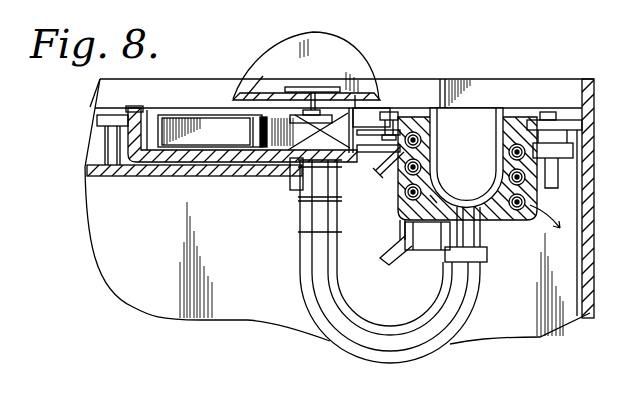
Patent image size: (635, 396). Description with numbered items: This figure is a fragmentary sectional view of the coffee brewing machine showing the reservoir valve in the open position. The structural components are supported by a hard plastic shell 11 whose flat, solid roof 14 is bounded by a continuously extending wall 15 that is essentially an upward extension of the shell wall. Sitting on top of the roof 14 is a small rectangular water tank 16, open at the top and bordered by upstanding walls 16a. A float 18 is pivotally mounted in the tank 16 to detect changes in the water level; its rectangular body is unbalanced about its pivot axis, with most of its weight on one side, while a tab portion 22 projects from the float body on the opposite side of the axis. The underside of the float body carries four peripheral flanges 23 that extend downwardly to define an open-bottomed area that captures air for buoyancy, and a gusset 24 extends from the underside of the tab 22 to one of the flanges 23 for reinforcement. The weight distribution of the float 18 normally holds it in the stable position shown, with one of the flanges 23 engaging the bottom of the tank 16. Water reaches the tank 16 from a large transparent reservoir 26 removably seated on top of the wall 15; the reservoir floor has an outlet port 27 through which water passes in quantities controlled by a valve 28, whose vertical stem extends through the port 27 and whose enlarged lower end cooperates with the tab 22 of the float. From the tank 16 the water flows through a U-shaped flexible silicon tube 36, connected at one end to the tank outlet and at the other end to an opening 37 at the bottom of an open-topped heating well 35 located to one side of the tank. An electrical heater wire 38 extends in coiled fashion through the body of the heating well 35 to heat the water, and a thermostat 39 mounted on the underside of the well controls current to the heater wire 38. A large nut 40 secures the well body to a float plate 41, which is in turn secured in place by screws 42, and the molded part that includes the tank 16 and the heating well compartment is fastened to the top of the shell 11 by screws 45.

The shell 11 is at (588, 269).
The roof 14 is at (152, 173).
The wall 15 is at (590, 103).
The water tank 16 is at (208, 170).
The upstanding walls 16a is at (142, 108).
The float 18 is at (213, 113).
The tab portion 22 is at (303, 126).
The peripheral flanges 23 is at (150, 112).
The gusset 24 is at (293, 167).
The reservoir 26 is at (244, 95).
The outlet port 27 is at (340, 92).
The valve 28 is at (300, 85).
The heating well 35 is at (436, 197).
The flexible tube 36 is at (312, 270).
The opening 37 is at (458, 204).
The electrical heater wire 38 is at (400, 182).
The thermostat 39 is at (413, 240).
The nut 40 is at (518, 117).
The float plate 41 is at (573, 112).
The screws 42 is at (388, 112).
The screws 45 is at (103, 113).